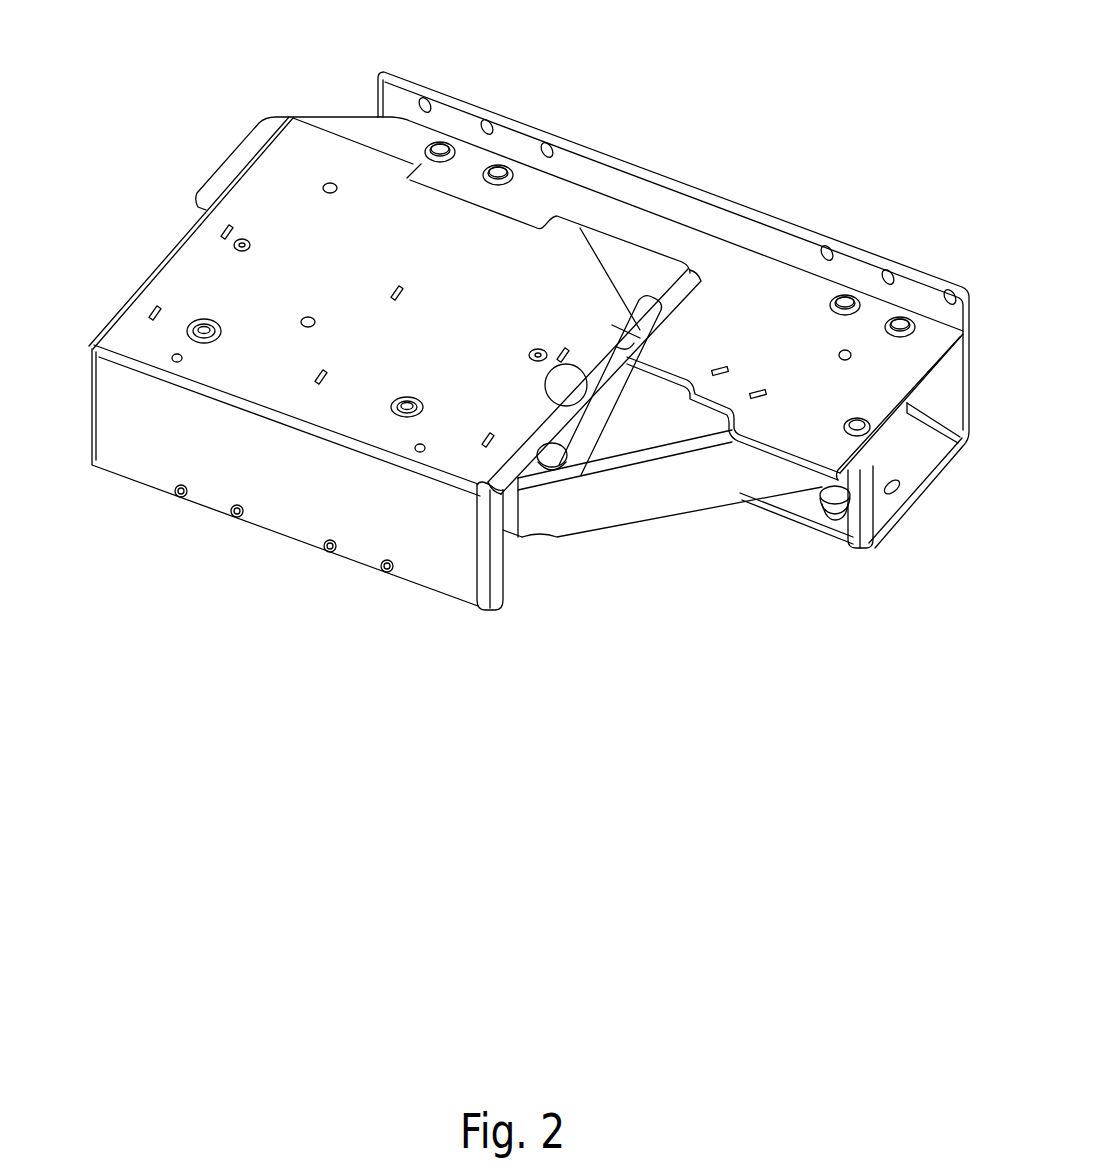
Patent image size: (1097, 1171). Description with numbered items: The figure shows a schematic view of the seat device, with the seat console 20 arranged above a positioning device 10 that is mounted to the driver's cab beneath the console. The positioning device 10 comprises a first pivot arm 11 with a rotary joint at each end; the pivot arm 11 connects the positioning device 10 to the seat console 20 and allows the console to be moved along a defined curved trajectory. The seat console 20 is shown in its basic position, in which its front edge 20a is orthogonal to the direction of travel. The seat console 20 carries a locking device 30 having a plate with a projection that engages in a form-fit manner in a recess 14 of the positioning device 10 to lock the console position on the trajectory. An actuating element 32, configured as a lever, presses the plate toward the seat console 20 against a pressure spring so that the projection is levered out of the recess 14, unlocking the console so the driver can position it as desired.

The positioning device 10 is at (658, 152).
The first pivot arm 11 is at (640, 500).
The recess 14 is at (720, 366).
The seat console 20 is at (96, 324).
The front edge 20a is at (237, 405).
The locking device 30 is at (547, 473).
The actuating element 32 is at (594, 343).